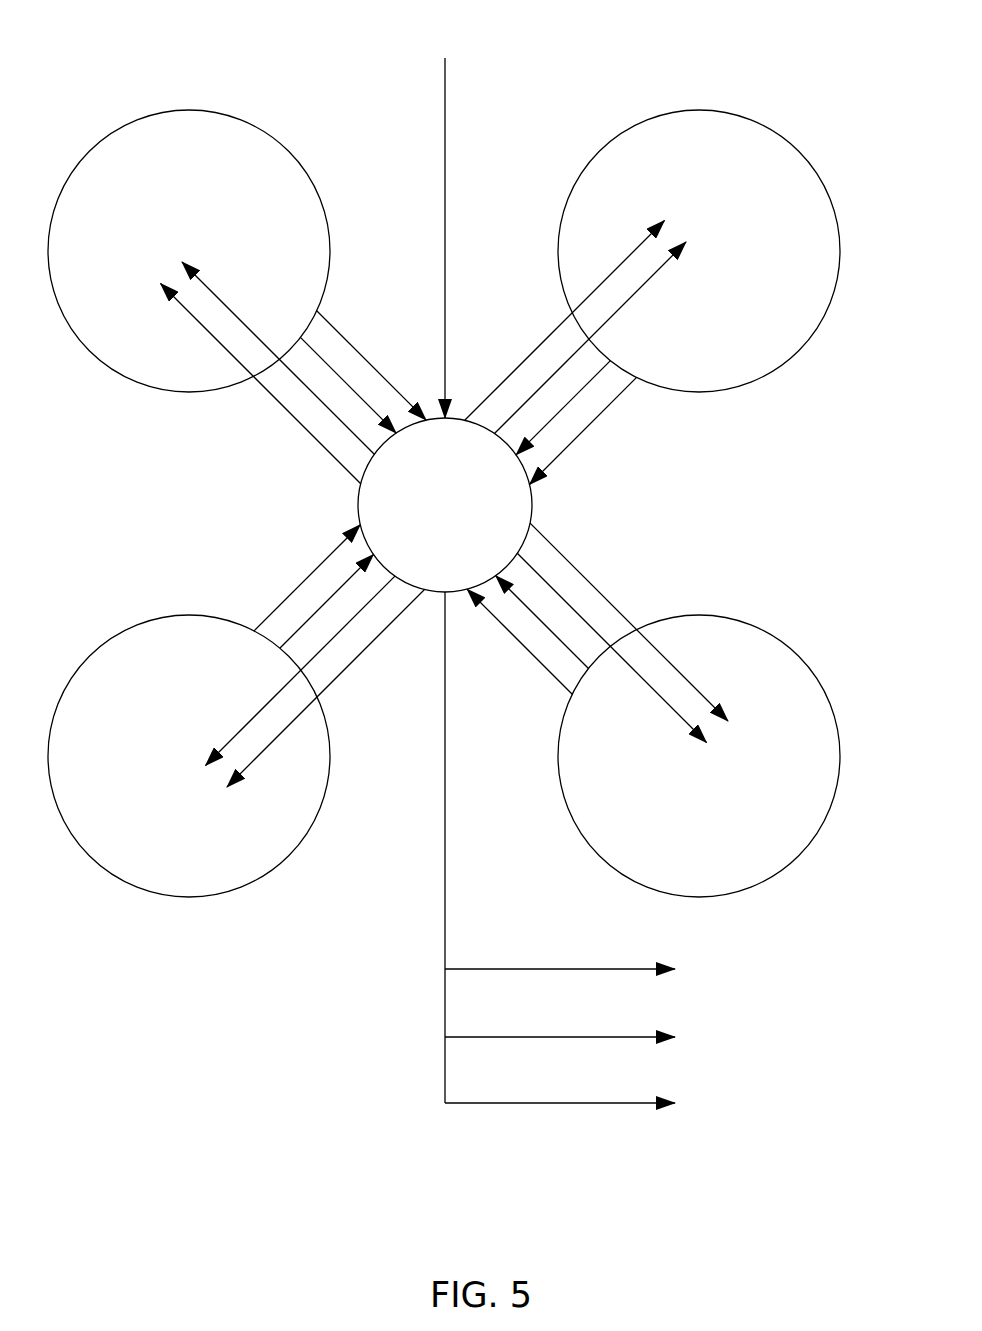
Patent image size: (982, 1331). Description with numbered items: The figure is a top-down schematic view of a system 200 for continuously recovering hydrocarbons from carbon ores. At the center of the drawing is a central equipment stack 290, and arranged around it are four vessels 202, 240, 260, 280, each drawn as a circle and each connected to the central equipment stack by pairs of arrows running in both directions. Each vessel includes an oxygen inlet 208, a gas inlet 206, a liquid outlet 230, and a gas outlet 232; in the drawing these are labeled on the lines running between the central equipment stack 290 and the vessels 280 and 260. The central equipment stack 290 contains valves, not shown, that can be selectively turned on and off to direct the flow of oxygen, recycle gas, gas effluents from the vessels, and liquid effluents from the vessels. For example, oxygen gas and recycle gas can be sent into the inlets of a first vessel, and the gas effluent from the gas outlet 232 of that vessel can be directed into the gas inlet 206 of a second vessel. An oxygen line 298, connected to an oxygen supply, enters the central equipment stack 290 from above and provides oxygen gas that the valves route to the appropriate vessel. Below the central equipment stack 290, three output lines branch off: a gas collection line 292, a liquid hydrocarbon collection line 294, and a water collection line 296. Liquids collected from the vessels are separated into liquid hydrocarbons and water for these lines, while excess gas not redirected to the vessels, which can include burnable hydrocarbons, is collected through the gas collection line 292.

The system 200 is at (143, 47).
The vessel 202 is at (210, 194).
The gas inlet 206 is at (580, 614).
The oxygen inlet 208 is at (566, 558).
The liquid outlet 230 is at (323, 560).
The gas outlet 232 is at (305, 617).
The vessel 240 is at (720, 194).
The vessel 260 is at (720, 854).
The vessel 280 is at (212, 854).
The central equipment stack 290 is at (469, 518).
The gas collection line 292 is at (452, 1105).
The liquid hydrocarbon collection line 294 is at (492, 1037).
The water collection line 296 is at (543, 969).
The oxygen line 298 is at (445, 127).